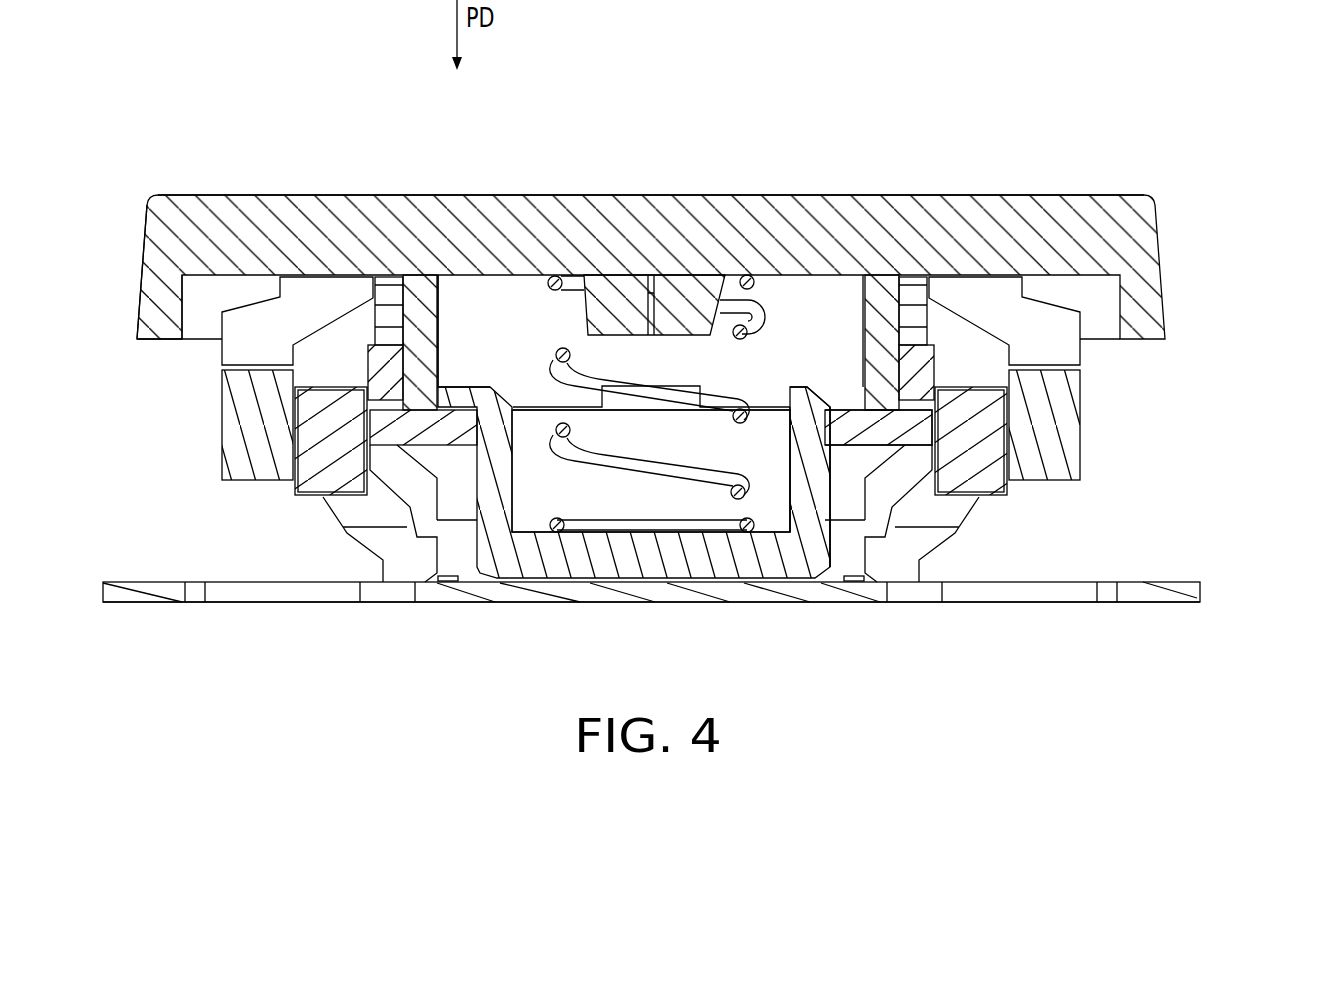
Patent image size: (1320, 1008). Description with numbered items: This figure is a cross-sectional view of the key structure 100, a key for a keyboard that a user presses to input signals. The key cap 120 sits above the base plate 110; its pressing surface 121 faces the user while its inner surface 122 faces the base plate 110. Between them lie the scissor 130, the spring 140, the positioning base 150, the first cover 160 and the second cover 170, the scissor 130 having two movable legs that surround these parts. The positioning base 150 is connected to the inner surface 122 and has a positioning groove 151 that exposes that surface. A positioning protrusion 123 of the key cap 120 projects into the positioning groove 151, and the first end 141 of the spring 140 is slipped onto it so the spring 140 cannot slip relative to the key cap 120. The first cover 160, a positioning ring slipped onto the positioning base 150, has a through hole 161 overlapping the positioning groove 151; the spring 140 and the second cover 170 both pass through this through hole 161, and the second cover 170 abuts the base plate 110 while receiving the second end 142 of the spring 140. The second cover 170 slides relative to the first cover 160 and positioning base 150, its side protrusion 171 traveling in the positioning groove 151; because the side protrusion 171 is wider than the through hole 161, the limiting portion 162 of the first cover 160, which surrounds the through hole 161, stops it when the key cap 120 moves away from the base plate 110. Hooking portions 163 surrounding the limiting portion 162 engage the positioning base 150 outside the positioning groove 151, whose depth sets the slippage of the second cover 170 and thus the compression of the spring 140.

The key structure 100 is at (1262, 683).
The base plate 110 is at (1158, 592).
The key cap 120 is at (292, 196).
The pressing surface 121 is at (960, 186).
The inner surface 122 is at (203, 282).
The positioning protrusion 123 is at (690, 305).
The scissor 130 is at (1047, 423).
The spring 140 is at (627, 380).
The first end 141 is at (773, 262).
The second end 142 is at (655, 520).
The positioning base 150 is at (406, 317).
The positioning groove 151 is at (465, 331).
The first cover 160 is at (908, 435).
The through hole 161 is at (838, 398).
The limiting portion 162 is at (848, 430).
The hooking portions 163 is at (925, 385).
The second cover 170 is at (497, 520).
The side protrusion 171 is at (832, 388).